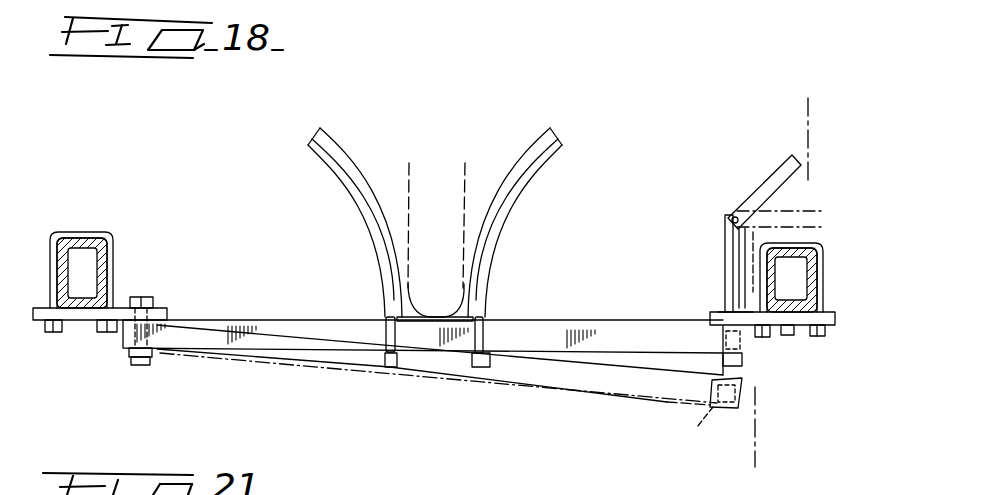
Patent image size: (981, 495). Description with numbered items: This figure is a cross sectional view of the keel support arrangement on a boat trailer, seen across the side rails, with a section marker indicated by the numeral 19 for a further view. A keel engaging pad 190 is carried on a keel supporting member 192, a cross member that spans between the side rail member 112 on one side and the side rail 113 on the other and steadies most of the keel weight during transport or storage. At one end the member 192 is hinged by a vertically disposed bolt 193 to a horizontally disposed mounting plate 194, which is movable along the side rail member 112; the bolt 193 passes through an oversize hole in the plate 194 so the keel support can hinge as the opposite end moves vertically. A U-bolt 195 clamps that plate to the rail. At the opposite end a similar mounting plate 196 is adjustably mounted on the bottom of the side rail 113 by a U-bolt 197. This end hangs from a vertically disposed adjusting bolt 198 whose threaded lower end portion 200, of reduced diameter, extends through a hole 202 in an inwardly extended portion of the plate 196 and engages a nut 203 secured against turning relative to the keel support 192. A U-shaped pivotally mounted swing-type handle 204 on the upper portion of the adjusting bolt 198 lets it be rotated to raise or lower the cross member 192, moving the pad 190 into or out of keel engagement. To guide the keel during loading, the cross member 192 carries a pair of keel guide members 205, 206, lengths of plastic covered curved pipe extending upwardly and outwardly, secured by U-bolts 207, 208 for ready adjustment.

The side rail member 112 is at (68, 272).
The U-bolt 195 is at (82, 234).
The vertically disposed bolt 193 is at (143, 298).
The horizontally disposed mounting plate 194 is at (86, 316).
The keel supporting member 192 is at (270, 355).
The keel guide member 206 is at (373, 226).
The keel guide member 205 is at (502, 222).
The keel engaging pad 190 is at (462, 318).
The U-bolt 208 is at (383, 368).
The U-bolt 207 is at (477, 355).
The U-shaped pivotally mounted swing-type handle 204 is at (766, 190).
The U-bolt 197 is at (833, 240).
The vertically disposed adjusting bolt 198 is at (725, 272).
The hole 202 is at (702, 305).
The side rail 113 is at (783, 310).
The mounting plate 196 is at (792, 326).
The threaded lower end portion 200 is at (740, 369).
The nut 203 is at (765, 447).
The section line 19- 19 is at (770, 122).